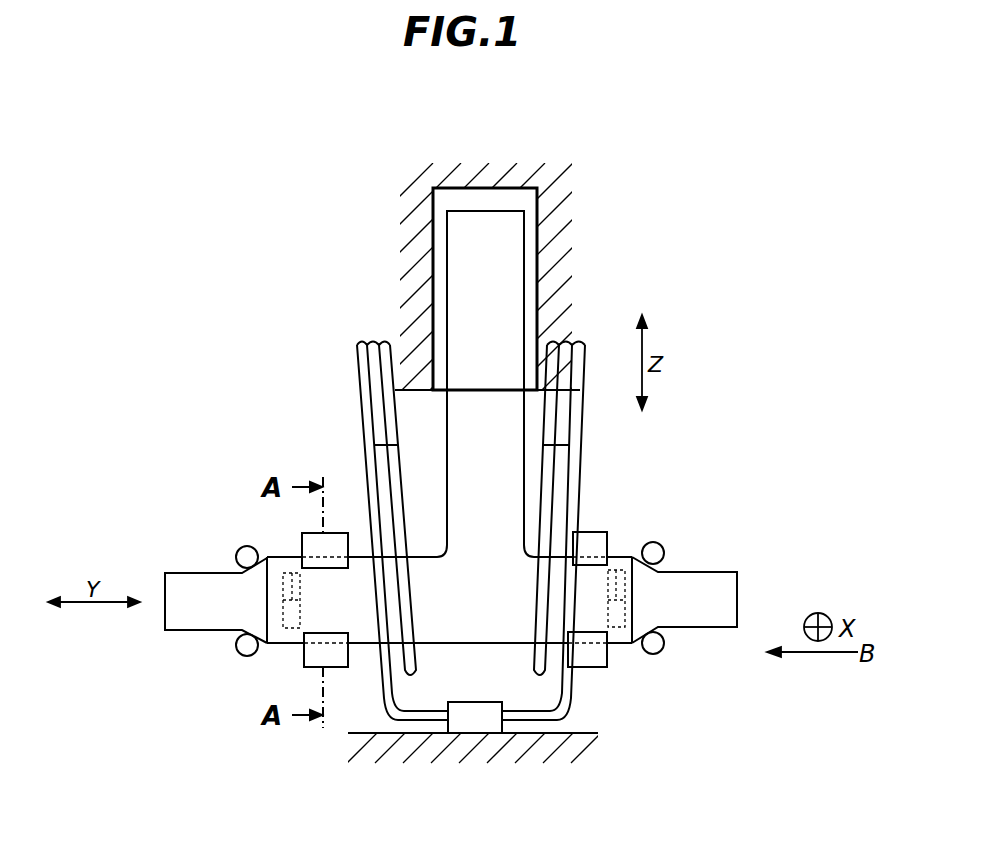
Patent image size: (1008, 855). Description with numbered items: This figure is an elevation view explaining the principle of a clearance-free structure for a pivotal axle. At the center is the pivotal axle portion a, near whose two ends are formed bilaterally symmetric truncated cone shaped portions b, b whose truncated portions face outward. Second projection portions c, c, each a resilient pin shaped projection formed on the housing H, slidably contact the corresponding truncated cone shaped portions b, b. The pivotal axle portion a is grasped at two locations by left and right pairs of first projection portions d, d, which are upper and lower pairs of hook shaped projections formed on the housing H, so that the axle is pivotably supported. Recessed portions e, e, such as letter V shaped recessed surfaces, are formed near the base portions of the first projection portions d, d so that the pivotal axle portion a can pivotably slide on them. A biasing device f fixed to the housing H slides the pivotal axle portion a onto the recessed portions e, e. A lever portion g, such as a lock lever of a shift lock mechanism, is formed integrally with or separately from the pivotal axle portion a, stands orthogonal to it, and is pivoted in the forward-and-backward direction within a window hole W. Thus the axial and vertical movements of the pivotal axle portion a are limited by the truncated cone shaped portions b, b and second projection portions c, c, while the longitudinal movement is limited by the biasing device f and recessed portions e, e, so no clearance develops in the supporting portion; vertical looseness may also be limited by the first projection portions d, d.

The pivotal axle portion a is at (503, 618).
The truncated cone shaped portions b is at (248, 600).
The second projection portions c is at (245, 546).
The first projection portions d is at (338, 533).
The recessed portions e is at (293, 573).
The biasing device f is at (567, 693).
The lever portion g is at (457, 342).
The housing H is at (545, 232).
The window hole W is at (477, 188).